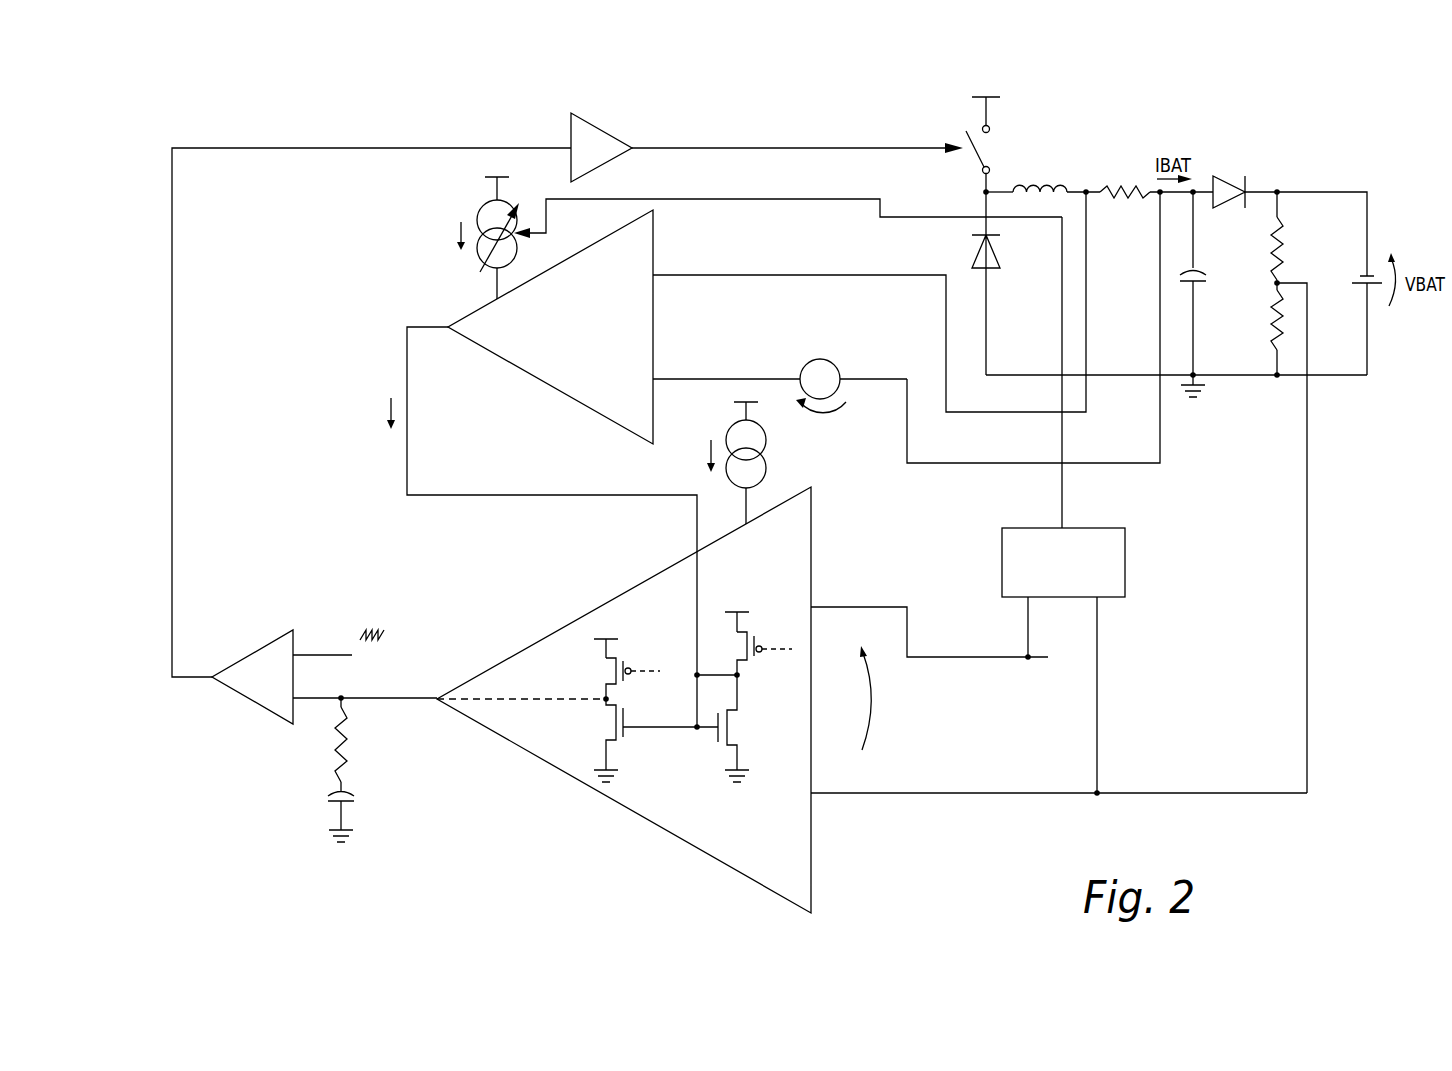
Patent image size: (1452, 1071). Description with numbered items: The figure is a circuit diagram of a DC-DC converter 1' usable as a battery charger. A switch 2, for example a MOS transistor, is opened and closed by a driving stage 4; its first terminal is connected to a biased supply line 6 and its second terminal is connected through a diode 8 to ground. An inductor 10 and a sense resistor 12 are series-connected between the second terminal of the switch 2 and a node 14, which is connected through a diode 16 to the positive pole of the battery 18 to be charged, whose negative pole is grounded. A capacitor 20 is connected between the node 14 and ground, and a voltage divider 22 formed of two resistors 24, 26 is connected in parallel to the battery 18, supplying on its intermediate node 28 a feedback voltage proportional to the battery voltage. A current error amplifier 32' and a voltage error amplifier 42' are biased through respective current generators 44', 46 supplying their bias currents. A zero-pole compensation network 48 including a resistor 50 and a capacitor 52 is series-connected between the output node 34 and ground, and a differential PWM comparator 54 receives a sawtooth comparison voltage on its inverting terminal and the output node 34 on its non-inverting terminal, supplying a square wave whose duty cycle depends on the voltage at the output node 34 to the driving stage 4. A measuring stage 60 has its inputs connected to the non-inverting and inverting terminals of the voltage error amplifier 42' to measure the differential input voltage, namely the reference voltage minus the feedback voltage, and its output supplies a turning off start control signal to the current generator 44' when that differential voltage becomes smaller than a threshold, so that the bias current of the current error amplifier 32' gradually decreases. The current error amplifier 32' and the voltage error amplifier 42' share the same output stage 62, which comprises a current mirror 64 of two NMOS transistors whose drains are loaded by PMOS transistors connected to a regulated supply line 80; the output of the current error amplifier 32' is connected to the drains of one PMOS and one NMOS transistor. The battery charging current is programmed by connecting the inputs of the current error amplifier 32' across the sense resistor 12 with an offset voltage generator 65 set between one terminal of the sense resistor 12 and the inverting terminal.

The DC-DC converter 1' is at (1405, 87).
The switch 2 is at (992, 154).
The driving stage 4 is at (607, 129).
The supply line 6 is at (975, 103).
The diode 8 is at (998, 250).
The inductor 10 is at (1050, 186).
The sense resistor 12 is at (1114, 197).
The node 14 is at (1195, 189).
The diode 16 is at (1228, 181).
The battery 18 is at (1357, 278).
The capacitor 20 is at (1200, 287).
The voltage divider 22 is at (1277, 283).
The resistor 24 is at (1270, 250).
The resistor 26 is at (1272, 330).
The intermediate node 28 is at (1272, 285).
The current error amplifier 32' is at (518, 468).
The output node 34 is at (345, 695).
The voltage error amplifier 42' is at (672, 700).
The current generator 44' is at (444, 235).
The bias current generator 46 is at (762, 462).
The zero-pole compensation network 48 is at (325, 780).
The resistor 50 is at (351, 748).
The capacitor 52 is at (352, 806).
The differential comparator 54 is at (254, 706).
The measuring stage 60 is at (1002, 563).
The output stage 62 is at (753, 688).
The current mirror 64 is at (688, 742).
The offset voltage generator 65 is at (804, 364).
The supply line 80 is at (613, 640).